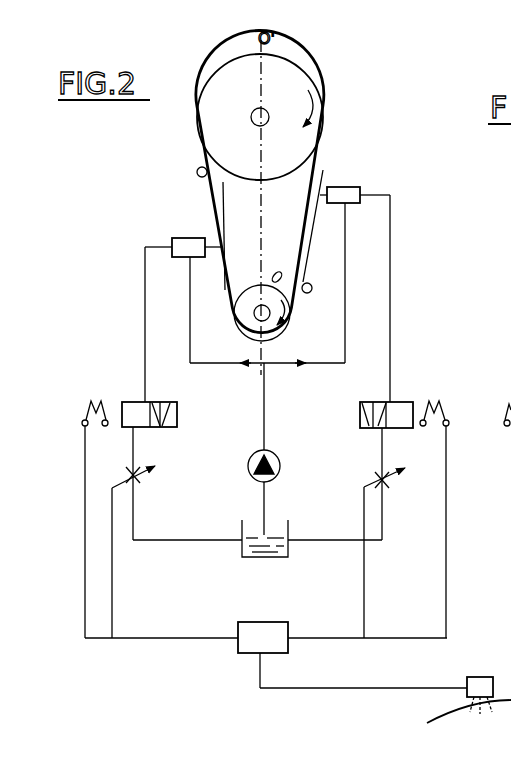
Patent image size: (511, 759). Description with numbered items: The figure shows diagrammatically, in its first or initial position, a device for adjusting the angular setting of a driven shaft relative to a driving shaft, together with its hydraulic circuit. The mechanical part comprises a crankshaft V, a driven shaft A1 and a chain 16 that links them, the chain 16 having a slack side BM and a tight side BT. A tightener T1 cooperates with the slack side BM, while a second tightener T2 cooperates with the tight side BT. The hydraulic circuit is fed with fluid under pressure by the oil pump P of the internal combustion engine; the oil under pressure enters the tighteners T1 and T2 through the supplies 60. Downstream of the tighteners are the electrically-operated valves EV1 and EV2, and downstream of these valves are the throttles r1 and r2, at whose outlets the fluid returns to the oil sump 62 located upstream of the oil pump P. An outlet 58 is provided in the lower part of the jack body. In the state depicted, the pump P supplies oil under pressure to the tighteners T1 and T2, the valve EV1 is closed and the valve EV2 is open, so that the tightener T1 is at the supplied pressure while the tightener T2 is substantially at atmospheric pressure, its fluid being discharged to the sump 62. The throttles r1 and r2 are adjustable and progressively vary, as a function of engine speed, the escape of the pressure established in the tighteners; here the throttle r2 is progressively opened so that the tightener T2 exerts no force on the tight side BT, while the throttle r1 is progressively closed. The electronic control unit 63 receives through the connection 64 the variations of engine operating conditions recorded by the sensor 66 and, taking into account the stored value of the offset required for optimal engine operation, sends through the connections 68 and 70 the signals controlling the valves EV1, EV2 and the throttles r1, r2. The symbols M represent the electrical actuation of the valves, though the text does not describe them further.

The chain 16 is at (296, 298).
The outlet 58 is at (146, 246).
The supplies 60 is at (248, 283).
The oil sump 62 is at (243, 522).
The electronic control unit 63 is at (263, 637).
The connection 64 is at (360, 688).
The sensor 66 is at (473, 677).
The connection 68 is at (317, 637).
The connection 70 is at (153, 637).
The driven shaft A1 is at (260, 117).
The crankshaft V is at (262, 313).
The slack side BM is at (205, 160).
The tight side BT is at (325, 148).
The tightener T1 is at (196, 239).
The second tightener T2 is at (340, 184).
The electrically-operated valve EV1 is at (150, 405).
The electrically-operated valve EV2 is at (373, 405).
The motor switch M is at (265, 413).
The oil pump P is at (269, 449).
The throttle r1 is at (135, 483).
The throttle r2 is at (386, 484).